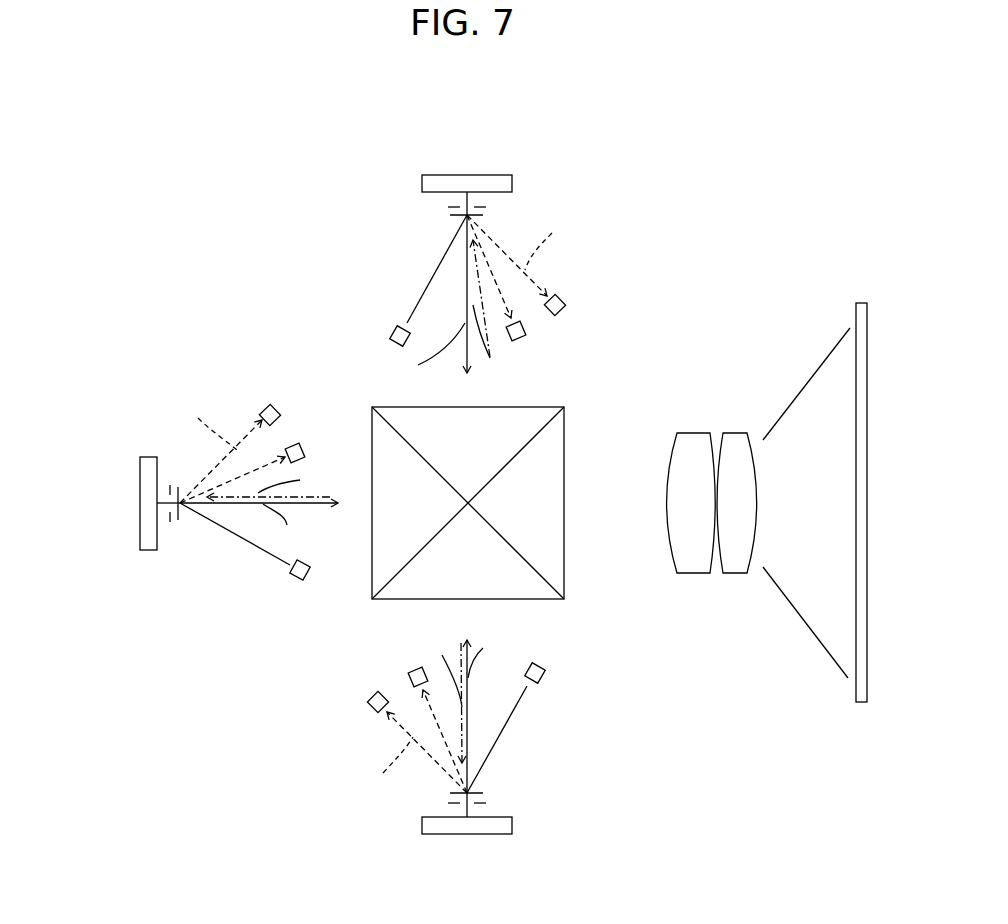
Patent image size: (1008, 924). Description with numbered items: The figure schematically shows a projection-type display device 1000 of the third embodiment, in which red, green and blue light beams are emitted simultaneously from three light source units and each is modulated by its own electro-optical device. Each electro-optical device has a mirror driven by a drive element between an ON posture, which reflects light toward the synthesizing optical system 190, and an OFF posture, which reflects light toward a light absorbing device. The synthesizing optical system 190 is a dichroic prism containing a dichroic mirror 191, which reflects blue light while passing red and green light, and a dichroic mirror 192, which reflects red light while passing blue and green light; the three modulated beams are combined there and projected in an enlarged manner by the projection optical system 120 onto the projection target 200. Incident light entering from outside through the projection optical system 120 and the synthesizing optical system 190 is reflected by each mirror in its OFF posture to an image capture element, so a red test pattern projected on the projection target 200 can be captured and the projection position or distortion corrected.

The projection-type display device 1000 is at (262, 233).
The synthesizing optical system 190 is at (514, 499).
The dichroic mirror 191 is at (532, 440).
The dichroic mirror 192 is at (532, 565).
The projection optical system 120 is at (752, 578).
The projection target 200 is at (860, 705).